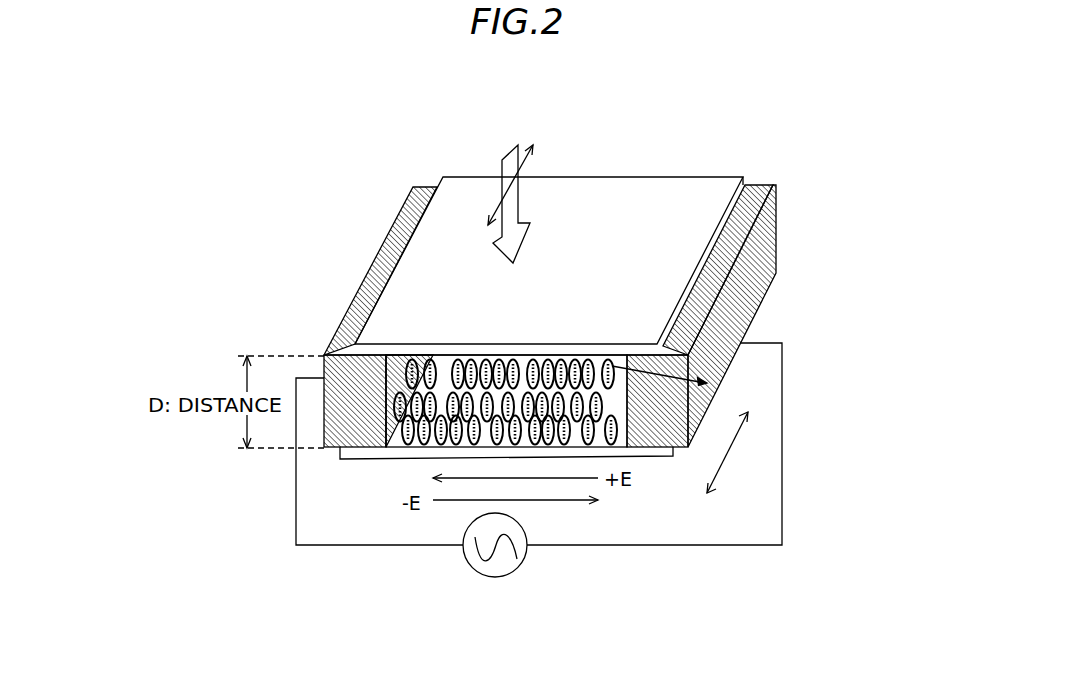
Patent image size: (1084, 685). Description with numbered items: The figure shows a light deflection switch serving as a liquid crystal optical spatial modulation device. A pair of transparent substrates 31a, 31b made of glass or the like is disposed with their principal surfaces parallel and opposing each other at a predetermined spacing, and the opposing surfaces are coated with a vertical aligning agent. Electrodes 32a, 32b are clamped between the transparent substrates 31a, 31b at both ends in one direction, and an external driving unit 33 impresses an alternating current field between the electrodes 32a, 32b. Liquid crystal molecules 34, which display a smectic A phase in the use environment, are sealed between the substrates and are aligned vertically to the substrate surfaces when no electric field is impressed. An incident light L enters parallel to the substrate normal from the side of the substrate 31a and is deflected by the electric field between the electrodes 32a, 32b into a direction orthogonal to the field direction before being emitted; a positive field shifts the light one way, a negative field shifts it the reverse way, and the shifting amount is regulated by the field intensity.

The transparent substrate 31a is at (632, 188).
The transparent substrate 31b is at (660, 450).
The electrode 32a is at (675, 453).
The electrode 32b is at (347, 447).
The external driving unit 33 is at (495, 578).
The liquid crystal molecules 34 is at (707, 384).
The incident light L is at (512, 146).